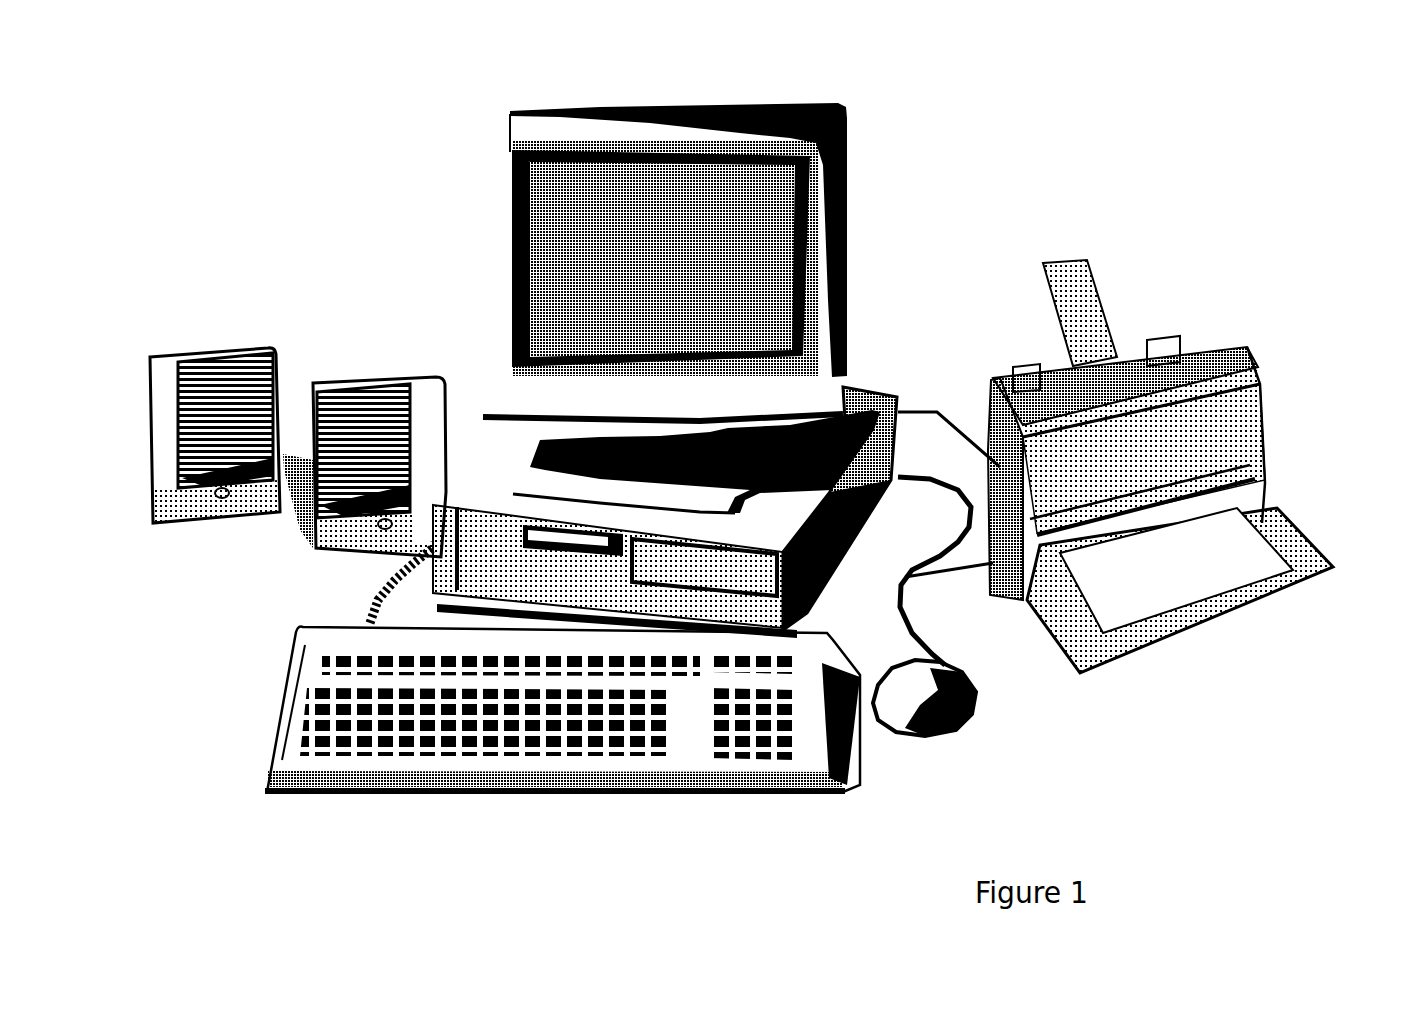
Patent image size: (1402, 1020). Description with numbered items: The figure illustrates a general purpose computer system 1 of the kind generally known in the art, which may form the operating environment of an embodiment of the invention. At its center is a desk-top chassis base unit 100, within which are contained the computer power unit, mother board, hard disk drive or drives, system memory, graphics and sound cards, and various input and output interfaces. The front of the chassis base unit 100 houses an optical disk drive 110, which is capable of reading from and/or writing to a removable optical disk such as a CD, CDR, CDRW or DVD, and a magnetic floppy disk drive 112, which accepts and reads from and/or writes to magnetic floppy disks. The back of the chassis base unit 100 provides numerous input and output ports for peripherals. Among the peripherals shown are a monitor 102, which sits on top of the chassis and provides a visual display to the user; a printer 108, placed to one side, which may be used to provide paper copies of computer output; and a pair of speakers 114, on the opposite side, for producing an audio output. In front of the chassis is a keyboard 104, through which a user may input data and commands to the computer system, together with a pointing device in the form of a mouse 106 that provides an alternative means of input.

The general purpose computer system 1 is at (1068, 158).
The desk-top chassis base unit 100 is at (873, 387).
The monitor 102 is at (842, 153).
The keyboard 104 is at (730, 760).
The mouse 106 is at (923, 733).
The printer 108 is at (1205, 377).
The optical disk drive 110 is at (690, 560).
The magnetic floppy disk drive 112 is at (540, 546).
The speakers 114 is at (298, 454).